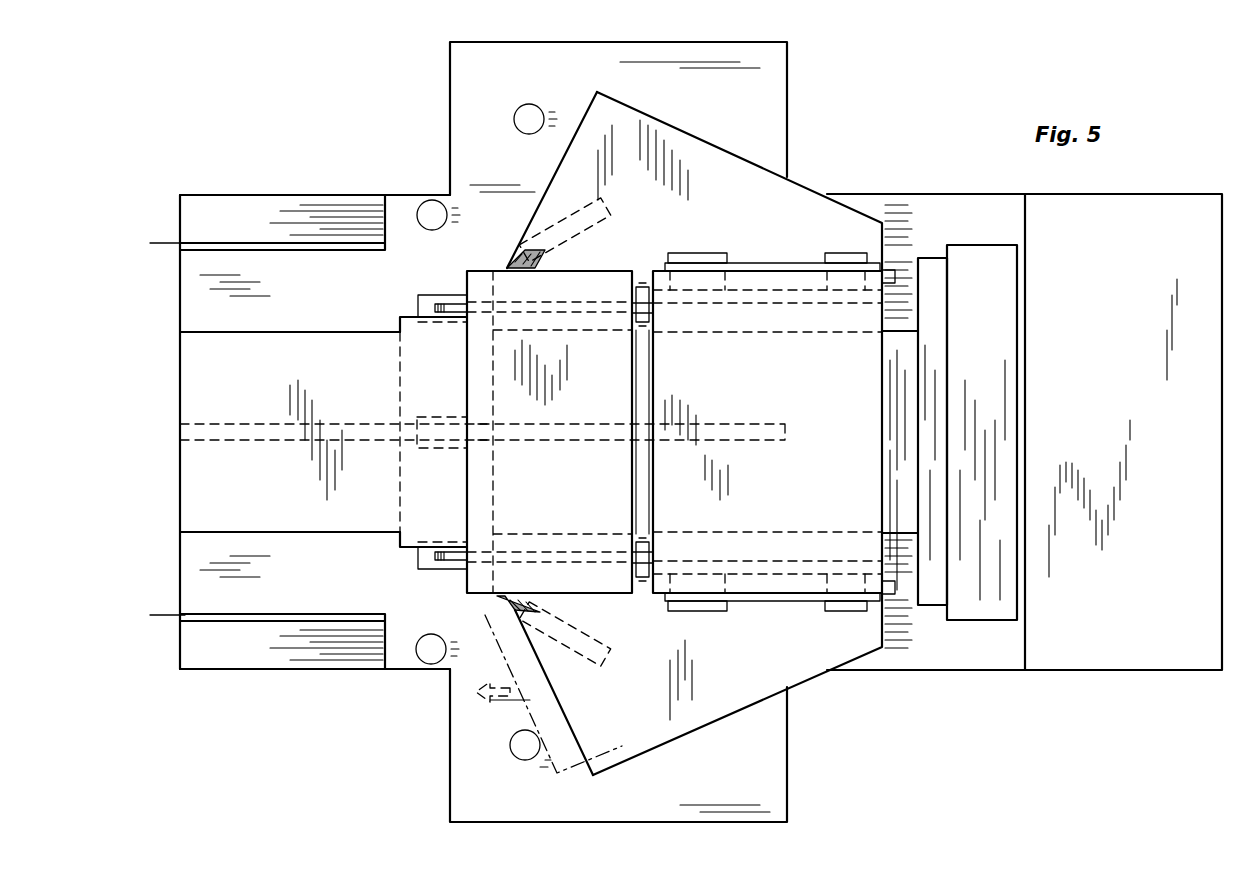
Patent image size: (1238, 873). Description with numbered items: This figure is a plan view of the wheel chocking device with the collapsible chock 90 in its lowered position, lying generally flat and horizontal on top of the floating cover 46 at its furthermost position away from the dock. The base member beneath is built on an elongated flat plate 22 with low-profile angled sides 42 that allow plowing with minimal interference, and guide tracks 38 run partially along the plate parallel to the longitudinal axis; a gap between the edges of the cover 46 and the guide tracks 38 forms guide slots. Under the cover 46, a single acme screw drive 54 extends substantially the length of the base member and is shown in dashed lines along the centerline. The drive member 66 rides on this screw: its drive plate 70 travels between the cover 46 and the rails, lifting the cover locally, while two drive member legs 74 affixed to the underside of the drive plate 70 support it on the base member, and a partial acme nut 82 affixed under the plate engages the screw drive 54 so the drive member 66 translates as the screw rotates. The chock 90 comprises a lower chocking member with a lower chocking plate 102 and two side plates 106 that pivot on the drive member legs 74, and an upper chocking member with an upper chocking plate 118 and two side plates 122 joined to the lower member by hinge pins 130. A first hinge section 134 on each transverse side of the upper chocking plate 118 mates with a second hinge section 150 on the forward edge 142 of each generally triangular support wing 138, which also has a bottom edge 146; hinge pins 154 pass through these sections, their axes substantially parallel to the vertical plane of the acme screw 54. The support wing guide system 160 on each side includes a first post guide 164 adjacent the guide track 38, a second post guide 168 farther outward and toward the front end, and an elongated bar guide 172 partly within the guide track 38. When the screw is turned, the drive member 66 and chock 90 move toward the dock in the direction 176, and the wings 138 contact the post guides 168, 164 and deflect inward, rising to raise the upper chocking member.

The elongated flat plate 22 is at (632, 46).
The guide track 38 is at (142, 427).
The angled sides 42 is at (306, 200).
The floating cover 46 is at (272, 499).
The acme screw drive 54 is at (236, 424).
The drive member 66 is at (388, 558).
The drive plate 70 is at (400, 317).
The drive member legs 74 is at (430, 300).
The partial acme nut 82 is at (448, 415).
The collapsible chock 90 is at (815, 172).
The lower chocking plate 102 is at (586, 474).
The side plates 106 is at (548, 302).
The upper chocking plate 118 is at (855, 457).
The side plates 122 is at (770, 300).
The hinge pins 130 is at (646, 320).
The first hinge section 134 is at (692, 252).
The support wings 138 is at (705, 150).
The forward edge 142 is at (638, 265).
The bottom edge 146 is at (553, 160).
The second hinge section 150 is at (770, 262).
The hinge pins 154 is at (895, 277).
The support wing guide system 160 is at (413, 139).
The first post guide 164 is at (432, 200).
The second post guide 168 is at (530, 105).
The bar guide 172 is at (512, 256).
The direction 176 is at (500, 705).